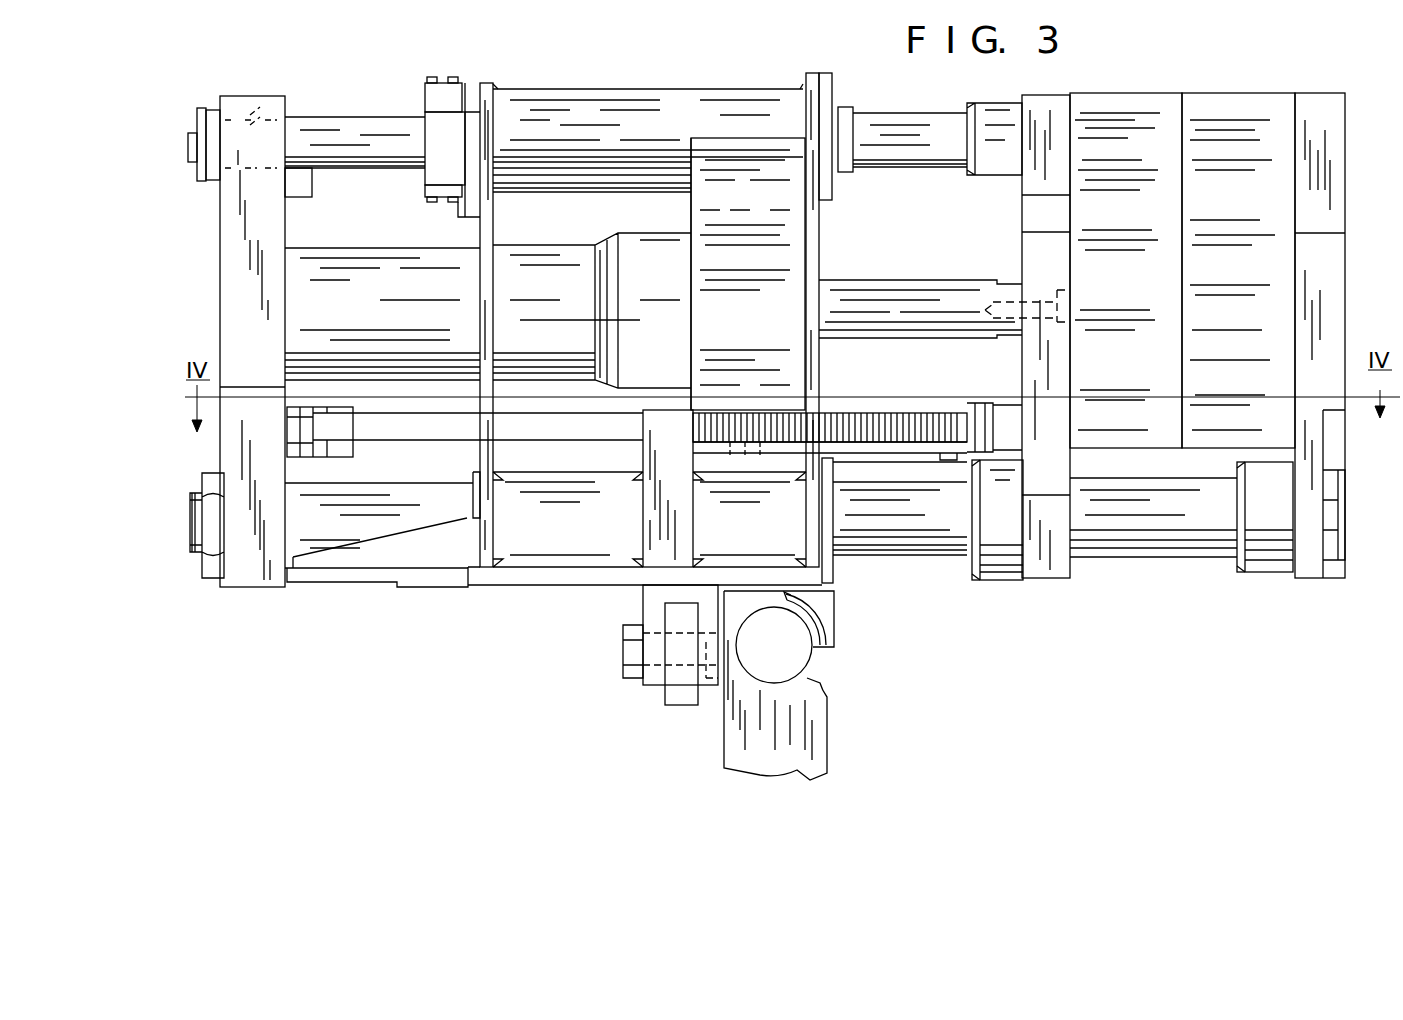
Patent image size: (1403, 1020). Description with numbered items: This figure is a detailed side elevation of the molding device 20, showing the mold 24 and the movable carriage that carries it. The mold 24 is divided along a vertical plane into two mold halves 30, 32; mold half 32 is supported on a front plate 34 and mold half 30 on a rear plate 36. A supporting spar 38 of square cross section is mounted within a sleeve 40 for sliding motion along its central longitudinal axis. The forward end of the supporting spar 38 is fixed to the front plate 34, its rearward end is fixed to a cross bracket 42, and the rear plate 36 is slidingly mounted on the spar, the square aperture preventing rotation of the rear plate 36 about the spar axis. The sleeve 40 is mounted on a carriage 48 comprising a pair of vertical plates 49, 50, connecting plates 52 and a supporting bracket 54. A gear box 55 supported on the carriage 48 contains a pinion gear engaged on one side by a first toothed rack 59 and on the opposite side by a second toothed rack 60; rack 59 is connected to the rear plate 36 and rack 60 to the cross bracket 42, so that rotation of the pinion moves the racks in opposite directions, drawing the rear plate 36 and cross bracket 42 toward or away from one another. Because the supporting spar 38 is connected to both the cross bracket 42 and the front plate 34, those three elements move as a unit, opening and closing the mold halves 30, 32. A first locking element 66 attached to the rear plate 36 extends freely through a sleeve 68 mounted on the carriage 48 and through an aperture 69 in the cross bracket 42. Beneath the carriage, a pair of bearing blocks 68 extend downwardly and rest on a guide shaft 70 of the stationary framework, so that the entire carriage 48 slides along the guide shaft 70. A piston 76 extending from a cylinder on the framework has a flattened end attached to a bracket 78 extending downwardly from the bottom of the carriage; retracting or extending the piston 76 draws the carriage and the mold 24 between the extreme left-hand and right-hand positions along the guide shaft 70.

The molding device 20 is at (336, 72).
The mold 24 is at (1278, 78).
The mold half 30 is at (1127, 104).
The mold half 32 is at (1235, 107).
The front plate 34 is at (1335, 252).
The rear plate 36 is at (1030, 249).
The supporting spar 38 is at (948, 544).
The sleeve 40 is at (835, 555).
The cross bracket 42 is at (232, 222).
The carriage 48 is at (466, 233).
The vertical plate 49 is at (489, 224).
The vertical plate 50 is at (813, 215).
The connecting plates 52 is at (532, 478).
The supporting bracket 54 is at (792, 258).
The gear box 55 is at (686, 524).
The first toothed rack 59 is at (898, 412).
The second toothed rack 60 is at (412, 432).
The first locking element 66 is at (905, 122).
The bearing block 68 is at (740, 98).
The aperture 69 is at (270, 112).
The guide shaft 70 is at (805, 655).
The piston 76 is at (682, 697).
The bracket 78 is at (652, 676).